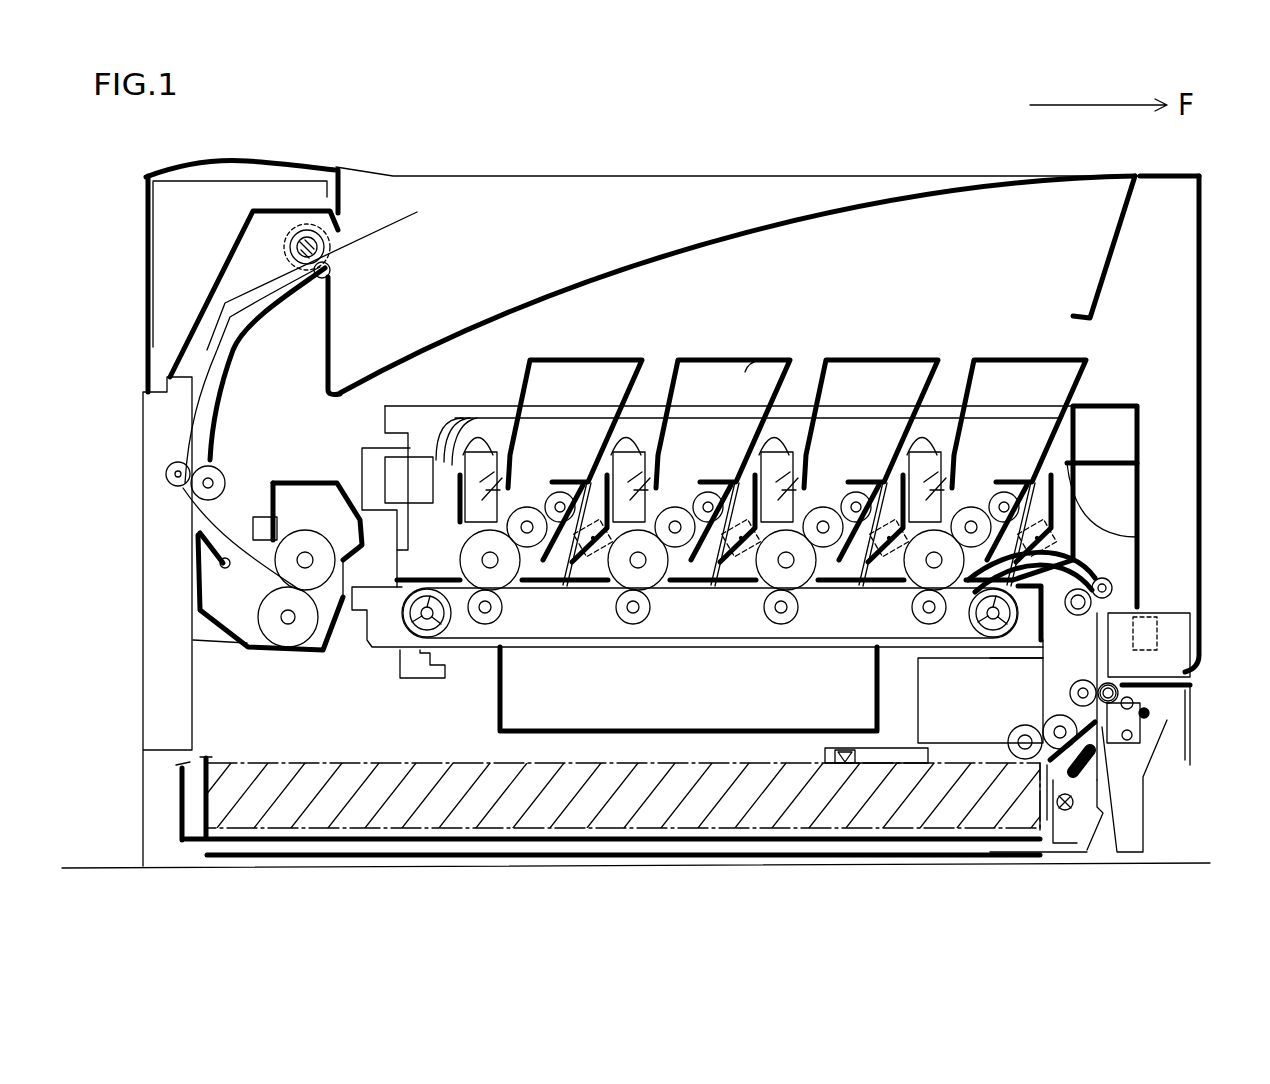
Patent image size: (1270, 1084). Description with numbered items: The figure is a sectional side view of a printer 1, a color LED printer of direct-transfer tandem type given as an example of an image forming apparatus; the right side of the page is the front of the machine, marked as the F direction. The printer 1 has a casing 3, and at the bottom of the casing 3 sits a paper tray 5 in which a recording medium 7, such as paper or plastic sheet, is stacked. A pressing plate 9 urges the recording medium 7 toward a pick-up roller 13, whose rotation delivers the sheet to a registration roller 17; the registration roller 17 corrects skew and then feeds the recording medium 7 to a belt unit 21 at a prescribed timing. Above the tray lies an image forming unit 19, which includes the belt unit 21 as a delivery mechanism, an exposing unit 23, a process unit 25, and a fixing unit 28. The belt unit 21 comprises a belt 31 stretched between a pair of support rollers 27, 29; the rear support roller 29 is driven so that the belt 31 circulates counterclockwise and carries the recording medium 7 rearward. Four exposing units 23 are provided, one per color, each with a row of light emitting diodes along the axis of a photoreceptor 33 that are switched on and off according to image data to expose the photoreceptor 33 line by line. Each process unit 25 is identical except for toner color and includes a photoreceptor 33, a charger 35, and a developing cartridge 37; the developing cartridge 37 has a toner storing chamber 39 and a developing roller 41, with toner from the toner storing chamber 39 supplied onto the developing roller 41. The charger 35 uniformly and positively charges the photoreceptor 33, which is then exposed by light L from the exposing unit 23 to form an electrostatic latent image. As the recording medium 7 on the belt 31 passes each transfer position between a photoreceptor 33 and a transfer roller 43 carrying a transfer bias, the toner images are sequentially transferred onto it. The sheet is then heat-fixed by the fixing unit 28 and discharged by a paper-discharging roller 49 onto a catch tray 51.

The printer 1 is at (937, 136).
The casing 3 is at (243, 157).
The paper tray 5 is at (357, 837).
The recording medium 7 is at (414, 212).
The pressing plate 9 is at (803, 847).
The pick-up roller 13 is at (1040, 743).
The registration roller 17 is at (1086, 610).
The image forming unit 19 is at (505, 386).
The belt unit 21 is at (1026, 664).
The exposing unit 23 is at (487, 457).
The process unit 25 is at (616, 347).
The support roller 27 is at (990, 630).
The fixing unit 28 is at (256, 667).
The support roller 29 is at (418, 618).
The belt 31 is at (457, 645).
The photoreceptor 33 is at (984, 482).
The charger 35 is at (590, 548).
The developing cartridge 37 is at (708, 530).
The toner storing chamber 39 is at (745, 372).
The developing roller 41 is at (678, 550).
The transfer roller 43 is at (500, 608).
The paper-discharging roller 49 is at (329, 275).
The catch tray 51 is at (523, 300).